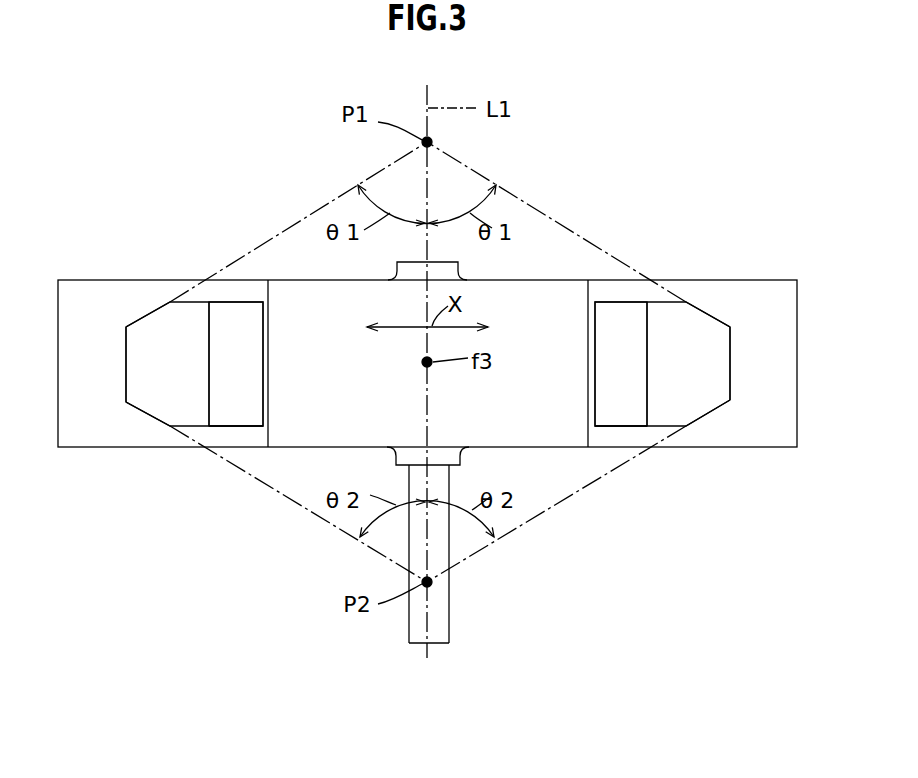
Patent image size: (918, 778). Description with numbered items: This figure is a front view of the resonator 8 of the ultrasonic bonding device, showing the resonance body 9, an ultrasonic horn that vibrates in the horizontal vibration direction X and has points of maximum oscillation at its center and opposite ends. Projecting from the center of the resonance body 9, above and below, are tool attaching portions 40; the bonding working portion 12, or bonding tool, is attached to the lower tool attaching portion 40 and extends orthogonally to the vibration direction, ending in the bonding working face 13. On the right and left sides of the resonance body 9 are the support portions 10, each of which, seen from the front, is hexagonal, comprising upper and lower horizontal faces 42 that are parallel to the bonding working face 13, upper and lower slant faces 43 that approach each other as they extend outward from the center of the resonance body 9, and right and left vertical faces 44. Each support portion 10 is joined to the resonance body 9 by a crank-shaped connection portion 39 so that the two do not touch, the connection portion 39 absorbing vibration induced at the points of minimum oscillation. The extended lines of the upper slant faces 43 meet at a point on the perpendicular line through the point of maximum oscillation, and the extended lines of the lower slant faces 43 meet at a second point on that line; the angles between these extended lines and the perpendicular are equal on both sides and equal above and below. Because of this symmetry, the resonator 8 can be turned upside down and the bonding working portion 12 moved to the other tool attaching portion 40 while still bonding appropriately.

The resonator 8 is at (797, 280).
The resonance body 9 is at (785, 301).
The support portion 10 is at (140, 350).
The bonding working portion 12 is at (438, 622).
The bonding working face 13 is at (443, 645).
The connection portion 39 is at (242, 417).
The tool attaching portion 40 is at (456, 264).
The horizontal face 42 is at (195, 300).
The slant face 43 is at (147, 310).
The vertical face 44 is at (126, 373).